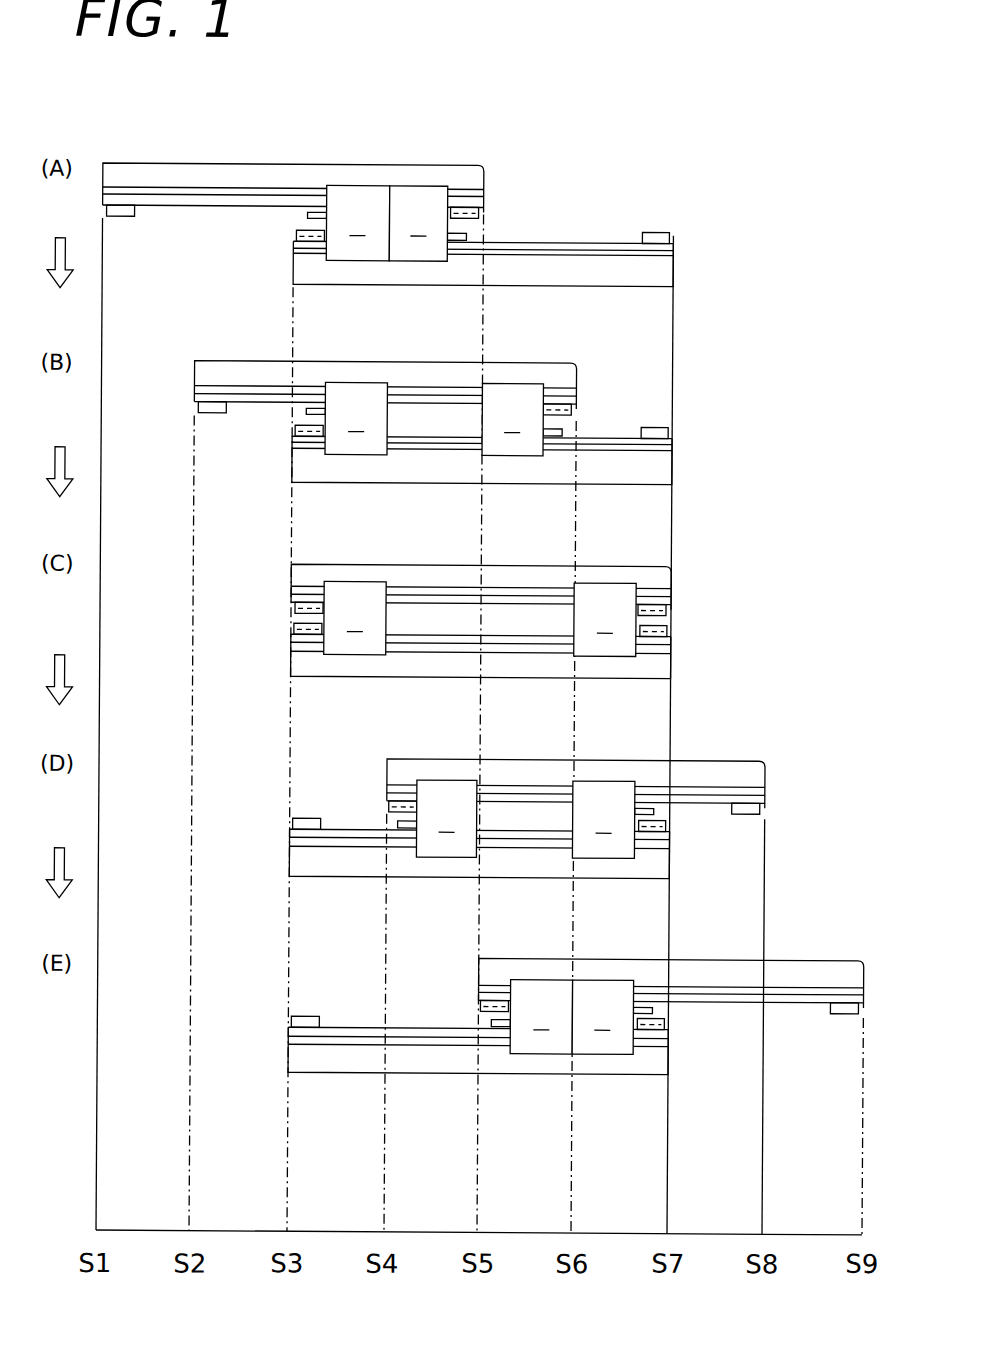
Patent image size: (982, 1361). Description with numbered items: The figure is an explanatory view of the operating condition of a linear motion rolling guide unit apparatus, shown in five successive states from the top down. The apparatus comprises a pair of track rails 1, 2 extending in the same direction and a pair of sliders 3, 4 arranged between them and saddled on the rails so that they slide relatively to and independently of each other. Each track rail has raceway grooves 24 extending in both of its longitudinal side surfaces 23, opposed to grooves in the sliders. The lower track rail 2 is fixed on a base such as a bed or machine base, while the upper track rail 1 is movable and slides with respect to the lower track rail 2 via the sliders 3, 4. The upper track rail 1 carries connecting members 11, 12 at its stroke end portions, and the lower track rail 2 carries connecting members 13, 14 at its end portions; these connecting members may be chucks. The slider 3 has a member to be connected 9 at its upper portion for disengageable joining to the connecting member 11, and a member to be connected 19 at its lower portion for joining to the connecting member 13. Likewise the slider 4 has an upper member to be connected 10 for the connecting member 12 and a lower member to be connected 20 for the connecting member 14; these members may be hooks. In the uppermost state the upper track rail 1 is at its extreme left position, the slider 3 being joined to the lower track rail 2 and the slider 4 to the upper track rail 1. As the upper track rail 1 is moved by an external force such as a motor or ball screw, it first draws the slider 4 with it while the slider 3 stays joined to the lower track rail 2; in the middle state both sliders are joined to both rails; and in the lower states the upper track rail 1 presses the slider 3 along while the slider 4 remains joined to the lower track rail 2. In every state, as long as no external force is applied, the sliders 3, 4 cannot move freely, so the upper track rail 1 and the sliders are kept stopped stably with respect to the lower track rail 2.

The upper track rail 1 is at (260, 176).
The lower track rail 2 is at (581, 237).
The slider 3 is at (449, 619).
The slider 4 is at (511, 620).
The member to be connected 9 is at (315, 204).
The member to be connected 10 is at (455, 186).
The connecting member 11 is at (110, 217).
The connecting member 12 is at (471, 212).
The connecting member 13 is at (290, 229).
The connecting member 14 is at (653, 228).
The member to be connected 19 is at (312, 214).
The member to be connected 20 is at (456, 231).
The longitudinal side surface 23 is at (181, 174).
The raceway groove 24 is at (199, 197).